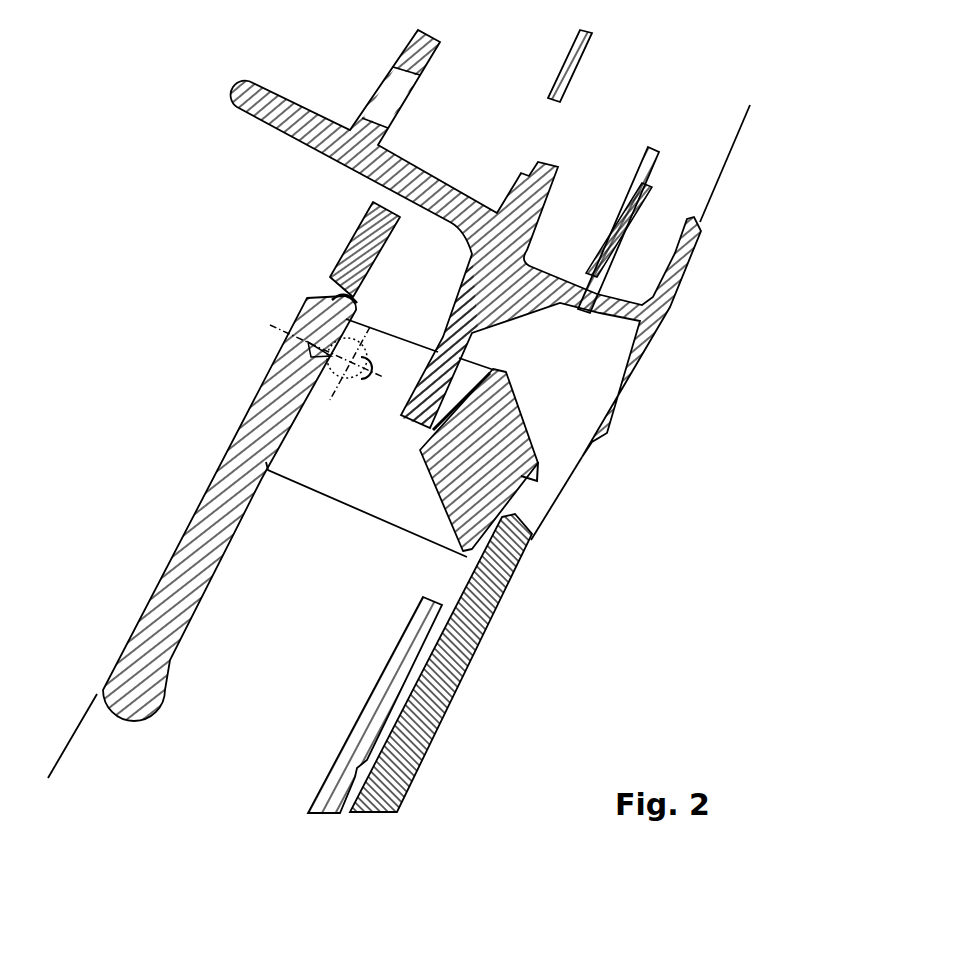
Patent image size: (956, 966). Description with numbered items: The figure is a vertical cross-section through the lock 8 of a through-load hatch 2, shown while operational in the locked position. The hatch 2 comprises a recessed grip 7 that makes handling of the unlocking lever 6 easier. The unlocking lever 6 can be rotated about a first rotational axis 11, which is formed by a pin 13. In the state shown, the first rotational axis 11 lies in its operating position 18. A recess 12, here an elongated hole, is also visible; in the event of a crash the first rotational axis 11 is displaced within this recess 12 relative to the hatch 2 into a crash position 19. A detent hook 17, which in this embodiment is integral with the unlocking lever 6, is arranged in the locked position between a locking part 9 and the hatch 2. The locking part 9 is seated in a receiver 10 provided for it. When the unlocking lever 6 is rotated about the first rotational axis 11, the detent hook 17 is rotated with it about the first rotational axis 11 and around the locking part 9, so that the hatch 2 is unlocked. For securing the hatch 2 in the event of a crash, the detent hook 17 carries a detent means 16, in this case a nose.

The through-load hatch 2 is at (480, 608).
The unlocking lever 6 is at (203, 545).
The recessed grip 7 is at (250, 763).
The lock 8 is at (728, 327).
The locking part 9 is at (403, 423).
The receiver 10 is at (385, 480).
The first rotational axis 11 is at (333, 352).
The recess 12 is at (330, 362).
The pin 13 is at (330, 353).
The detent means 16 is at (535, 470).
The detent hook 17 is at (505, 455).
The operating position 18 is at (352, 327).
The crash position 19 is at (365, 368).